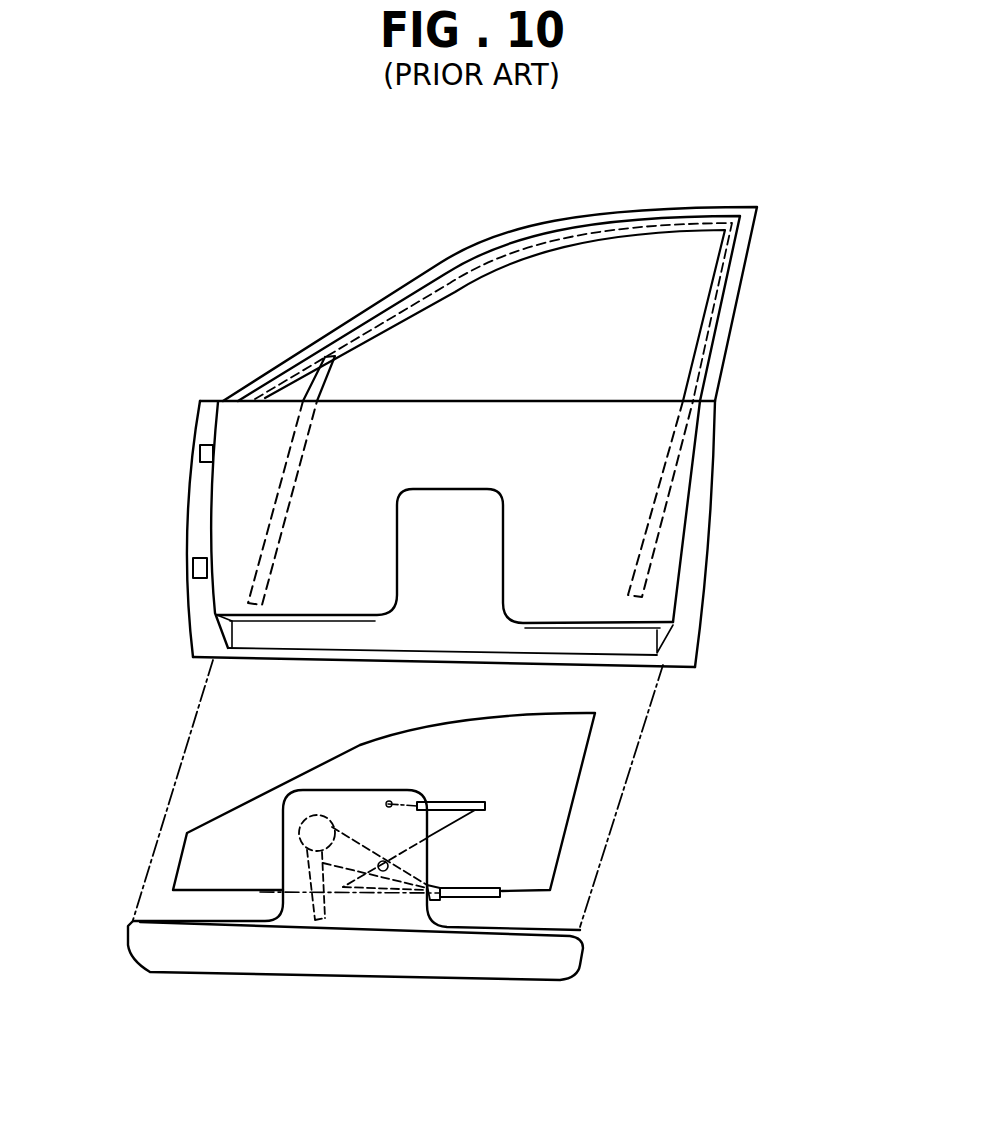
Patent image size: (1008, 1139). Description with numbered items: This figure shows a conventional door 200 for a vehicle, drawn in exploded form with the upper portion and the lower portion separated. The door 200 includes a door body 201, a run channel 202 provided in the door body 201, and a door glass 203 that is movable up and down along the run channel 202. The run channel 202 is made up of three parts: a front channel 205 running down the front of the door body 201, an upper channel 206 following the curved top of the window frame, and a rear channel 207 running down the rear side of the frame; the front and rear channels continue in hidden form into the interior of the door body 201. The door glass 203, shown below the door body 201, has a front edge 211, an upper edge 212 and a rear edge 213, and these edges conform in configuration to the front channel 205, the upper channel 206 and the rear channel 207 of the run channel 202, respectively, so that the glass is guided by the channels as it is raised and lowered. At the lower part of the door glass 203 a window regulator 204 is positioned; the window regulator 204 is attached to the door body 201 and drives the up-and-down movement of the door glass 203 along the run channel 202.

The door 200 is at (220, 160).
The door body 201 is at (181, 453).
The run channel 202 is at (277, 432).
The door glass 203 is at (225, 790).
The window regulator 204 is at (440, 802).
The front channel 205 is at (278, 480).
The upper channel 206 is at (440, 287).
The rear channel 207 is at (712, 326).
The front edge 211 is at (180, 857).
The upper edge 212 is at (290, 775).
The rear edge 213 is at (577, 793).